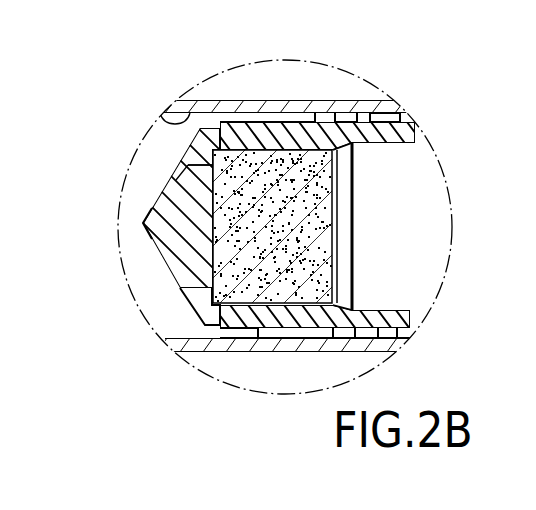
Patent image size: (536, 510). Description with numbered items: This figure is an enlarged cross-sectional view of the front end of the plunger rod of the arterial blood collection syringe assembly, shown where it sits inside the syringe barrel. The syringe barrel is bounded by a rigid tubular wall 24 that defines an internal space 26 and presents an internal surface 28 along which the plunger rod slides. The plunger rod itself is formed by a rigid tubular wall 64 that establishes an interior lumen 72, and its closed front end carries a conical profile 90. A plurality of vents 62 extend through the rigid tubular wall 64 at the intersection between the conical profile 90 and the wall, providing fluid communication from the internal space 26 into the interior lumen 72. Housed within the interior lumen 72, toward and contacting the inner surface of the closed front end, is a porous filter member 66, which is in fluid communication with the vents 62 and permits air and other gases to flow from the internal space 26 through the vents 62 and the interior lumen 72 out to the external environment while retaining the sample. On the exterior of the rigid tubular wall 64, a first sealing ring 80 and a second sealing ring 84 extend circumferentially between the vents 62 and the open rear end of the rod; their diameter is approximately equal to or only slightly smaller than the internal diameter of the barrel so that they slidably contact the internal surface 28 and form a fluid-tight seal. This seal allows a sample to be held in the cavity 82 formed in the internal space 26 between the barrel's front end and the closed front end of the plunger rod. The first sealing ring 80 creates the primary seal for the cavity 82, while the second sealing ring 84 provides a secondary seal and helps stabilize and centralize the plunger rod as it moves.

The rigid tubular wall 24 is at (290, 104).
The internal space 26 is at (143, 268).
The internal surface 28 is at (165, 115).
The vents 62 is at (165, 150).
The rigid tubular wall 64 is at (245, 142).
The porous filter member 66 is at (262, 302).
The interior lumen 72 is at (372, 227).
The first sealing ring 80 is at (323, 116).
The cavity 82 is at (143, 225).
The second sealing ring 84 is at (365, 122).
The conical profile 90 is at (200, 150).